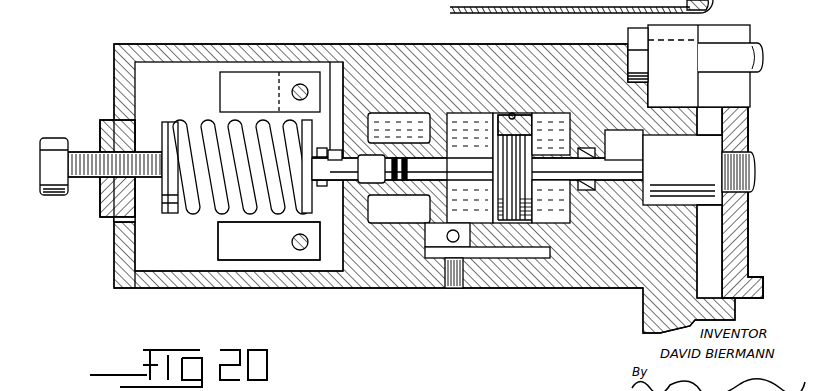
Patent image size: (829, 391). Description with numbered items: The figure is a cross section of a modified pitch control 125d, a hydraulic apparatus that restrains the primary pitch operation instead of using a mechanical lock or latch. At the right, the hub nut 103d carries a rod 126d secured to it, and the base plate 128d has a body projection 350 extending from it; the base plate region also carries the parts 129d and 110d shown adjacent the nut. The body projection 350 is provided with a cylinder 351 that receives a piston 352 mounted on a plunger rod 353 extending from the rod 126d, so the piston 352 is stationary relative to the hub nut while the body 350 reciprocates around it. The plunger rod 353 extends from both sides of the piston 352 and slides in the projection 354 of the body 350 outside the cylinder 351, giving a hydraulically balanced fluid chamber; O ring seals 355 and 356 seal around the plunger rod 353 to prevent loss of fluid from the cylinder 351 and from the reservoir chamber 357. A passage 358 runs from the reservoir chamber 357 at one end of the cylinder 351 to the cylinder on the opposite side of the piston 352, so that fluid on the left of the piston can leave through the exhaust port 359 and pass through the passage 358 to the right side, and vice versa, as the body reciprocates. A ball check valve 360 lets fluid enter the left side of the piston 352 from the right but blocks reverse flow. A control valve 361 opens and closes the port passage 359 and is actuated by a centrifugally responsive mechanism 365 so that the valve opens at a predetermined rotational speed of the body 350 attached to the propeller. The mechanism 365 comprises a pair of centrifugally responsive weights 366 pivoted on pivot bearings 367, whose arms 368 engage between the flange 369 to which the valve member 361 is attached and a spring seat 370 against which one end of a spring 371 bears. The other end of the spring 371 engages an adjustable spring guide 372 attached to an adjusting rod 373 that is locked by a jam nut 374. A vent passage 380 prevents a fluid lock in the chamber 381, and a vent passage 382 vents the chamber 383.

The pitch control 125d is at (119, 44).
The centrifugally responsive weights 366 is at (228, 88).
The pivot bearings 367 is at (292, 94).
The centrifugally responsive mechanism 365 is at (208, 105).
The adjustable spring guide 372 is at (163, 137).
The adjusting rod 373 is at (88, 153).
The jam nut 374 is at (100, 215).
The vent passage 382 is at (113, 224).
The chamber 383 is at (153, 262).
The spring 371 is at (193, 205).
The arms 368 is at (218, 225).
The spring seat 370 is at (308, 126).
The flange 369 is at (333, 150).
The reservoir chamber 357 is at (397, 157).
The projection 354 is at (378, 113).
The O ring seal 355 is at (477, 166).
The chamber 381 is at (399, 209).
The body projection 350 is at (452, 45).
The exhaust port 359 is at (455, 177).
The cylinder 351 is at (478, 113).
The piston 352 is at (528, 115).
The plunger rod 353 is at (630, 156).
The O ring seal 356 is at (588, 165).
The control valve 361 is at (348, 225).
The vent passage 380 is at (380, 248).
The ball check valve 360 is at (448, 242).
The passage 358 is at (518, 256).
The base plate 128d is at (680, 33).
The fitting nut 129d is at (638, 57).
The pipe line 110d is at (761, 60).
The rod 126d is at (753, 157).
The hub nut 103d is at (743, 253).